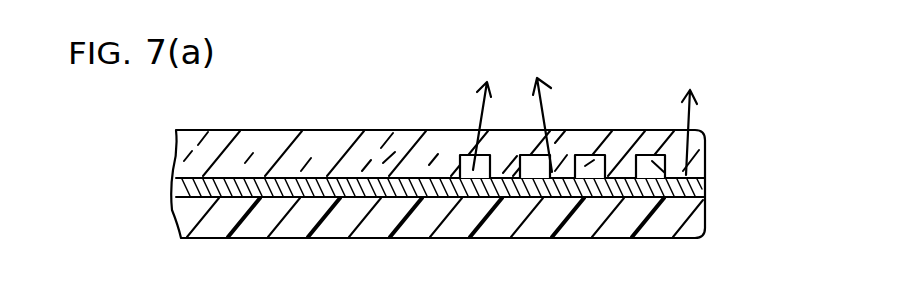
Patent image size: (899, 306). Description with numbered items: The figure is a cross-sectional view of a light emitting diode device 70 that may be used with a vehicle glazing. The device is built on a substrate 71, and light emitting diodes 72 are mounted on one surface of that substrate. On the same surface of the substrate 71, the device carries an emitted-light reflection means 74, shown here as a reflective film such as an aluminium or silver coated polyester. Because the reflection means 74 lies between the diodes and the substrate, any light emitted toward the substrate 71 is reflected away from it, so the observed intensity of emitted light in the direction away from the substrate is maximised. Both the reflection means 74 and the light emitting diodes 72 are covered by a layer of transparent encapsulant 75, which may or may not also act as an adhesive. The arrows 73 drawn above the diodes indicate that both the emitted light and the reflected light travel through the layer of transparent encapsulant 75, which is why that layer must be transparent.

The light emitting diode device 70 is at (101, 138).
The substrate 71 is at (255, 222).
The light emitting diodes 72 is at (472, 167).
The arrows 73 is at (702, 72).
The emitted-light reflection means 74 is at (700, 187).
The layer of transparent encapsulant 75 is at (385, 160).